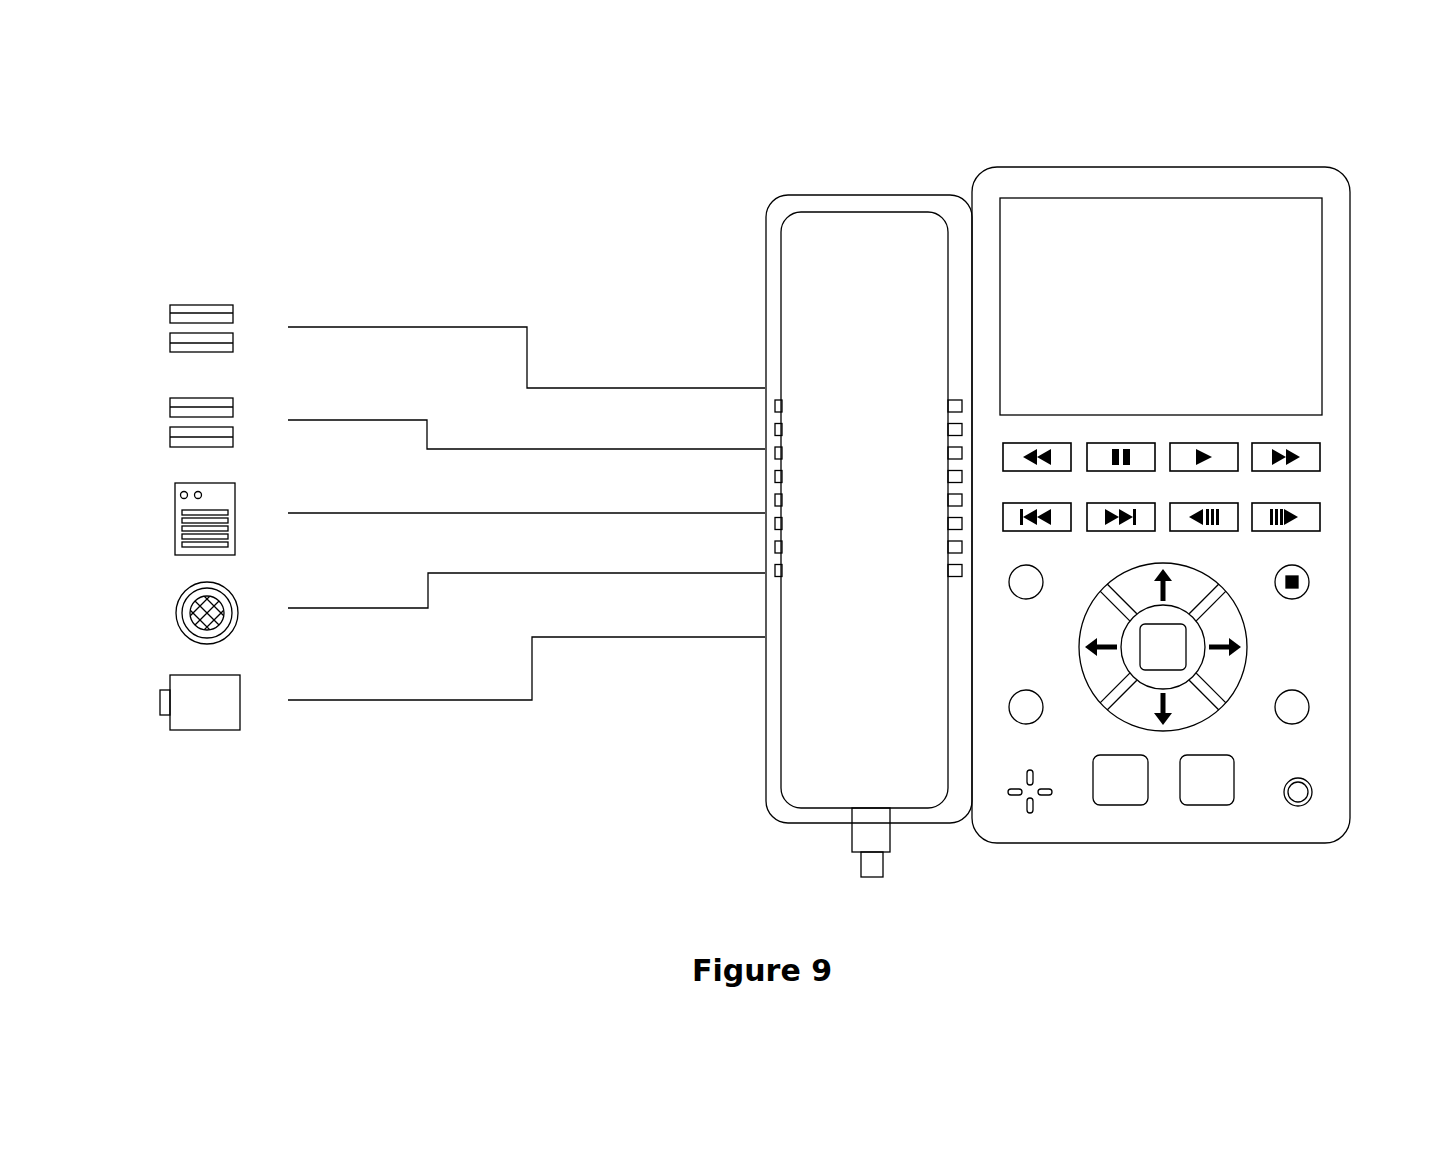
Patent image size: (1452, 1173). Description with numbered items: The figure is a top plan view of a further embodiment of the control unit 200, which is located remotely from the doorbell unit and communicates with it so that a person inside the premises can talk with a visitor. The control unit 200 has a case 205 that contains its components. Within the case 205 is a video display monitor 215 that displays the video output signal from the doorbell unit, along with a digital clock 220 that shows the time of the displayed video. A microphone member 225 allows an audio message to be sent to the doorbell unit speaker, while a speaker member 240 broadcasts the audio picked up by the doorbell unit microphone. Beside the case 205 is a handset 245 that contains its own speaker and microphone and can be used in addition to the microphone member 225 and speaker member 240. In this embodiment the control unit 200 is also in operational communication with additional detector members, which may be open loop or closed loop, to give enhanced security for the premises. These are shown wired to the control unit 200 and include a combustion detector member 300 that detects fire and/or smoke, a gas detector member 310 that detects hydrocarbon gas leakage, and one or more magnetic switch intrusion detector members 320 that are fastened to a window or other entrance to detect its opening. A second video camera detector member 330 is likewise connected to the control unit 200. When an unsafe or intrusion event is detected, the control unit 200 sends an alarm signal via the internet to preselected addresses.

The control unit 200 is at (640, 227).
The case 205 is at (1022, 165).
The video display monitor 215 is at (1182, 291).
The digital clock 220 is at (1300, 375).
The microphone member 225 is at (1018, 823).
The speaker member 240 is at (762, 500).
The handset 245 is at (833, 792).
The combustion detector member 300 is at (470, 606).
The gas detector member 310 is at (470, 513).
The magnetic switch intrusion detector member 320 is at (467, 374).
The second video camera detector member 330 is at (462, 683).